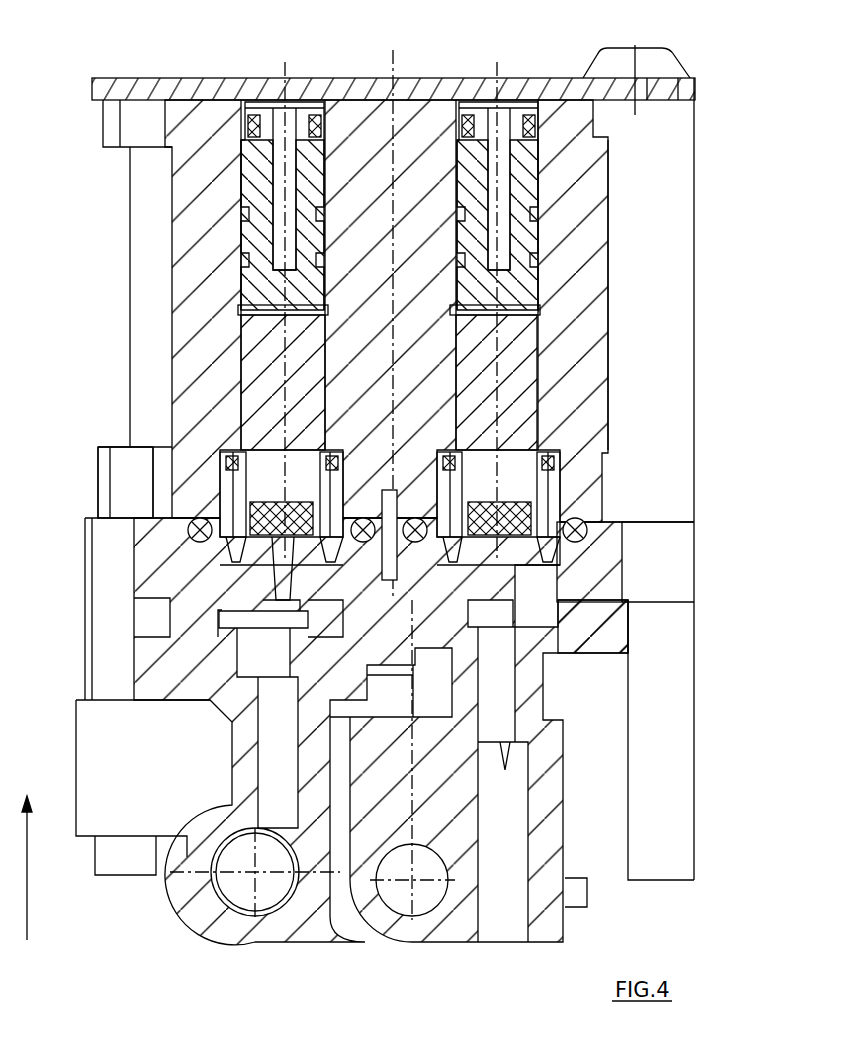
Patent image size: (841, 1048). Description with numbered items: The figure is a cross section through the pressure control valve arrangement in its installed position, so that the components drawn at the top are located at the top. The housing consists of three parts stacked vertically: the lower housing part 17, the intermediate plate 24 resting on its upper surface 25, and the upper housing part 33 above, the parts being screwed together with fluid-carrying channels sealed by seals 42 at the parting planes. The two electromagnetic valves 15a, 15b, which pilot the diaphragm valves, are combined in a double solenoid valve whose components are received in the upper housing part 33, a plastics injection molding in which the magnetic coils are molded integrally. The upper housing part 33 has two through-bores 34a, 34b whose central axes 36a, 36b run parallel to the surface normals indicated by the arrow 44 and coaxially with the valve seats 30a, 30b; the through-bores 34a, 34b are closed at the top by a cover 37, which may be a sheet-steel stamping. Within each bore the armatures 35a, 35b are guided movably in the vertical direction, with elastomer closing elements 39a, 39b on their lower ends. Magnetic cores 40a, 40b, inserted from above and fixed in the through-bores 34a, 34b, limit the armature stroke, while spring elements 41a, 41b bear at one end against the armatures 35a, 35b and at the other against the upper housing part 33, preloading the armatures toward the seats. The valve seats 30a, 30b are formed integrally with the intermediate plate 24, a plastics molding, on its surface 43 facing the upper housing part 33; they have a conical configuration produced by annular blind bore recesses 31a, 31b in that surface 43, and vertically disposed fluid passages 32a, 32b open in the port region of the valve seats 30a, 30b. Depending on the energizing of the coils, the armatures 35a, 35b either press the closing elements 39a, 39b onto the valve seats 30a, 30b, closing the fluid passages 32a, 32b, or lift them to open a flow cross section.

The cover 37 is at (540, 85).
The central axis 36a is at (285, 177).
The central axis 36b is at (500, 180).
The magnetic core 40a is at (255, 227).
The magnetic core 40b is at (520, 247).
The through-bore 34a is at (265, 310).
The through-bore 34b is at (545, 311).
The upper housing part 33 is at (590, 285).
The electromagnetic valve 15a is at (150, 340).
The electromagnetic valve 15b is at (633, 366).
The armature 35a is at (242, 395).
The armature 35b is at (530, 425).
The closing element 39a is at (225, 468).
The closing element 39b is at (558, 462).
The spring element 41a is at (205, 505).
The spring element 41b is at (580, 478).
The surface 43 is at (175, 515).
The seal 42 is at (186, 528).
The valve seat 30a is at (283, 560).
The valve seat 30b is at (560, 503).
The annular blind bore recess 31a is at (250, 548).
The annular blind bore recess 31b is at (600, 525).
The upper surface 25 is at (620, 566).
The intermediate plate 24 is at (615, 588).
The fluid passage 32a is at (280, 576).
The fluid passage 32b is at (390, 582).
The lower housing part 17 is at (147, 656).
The arrow 44 is at (27, 905).